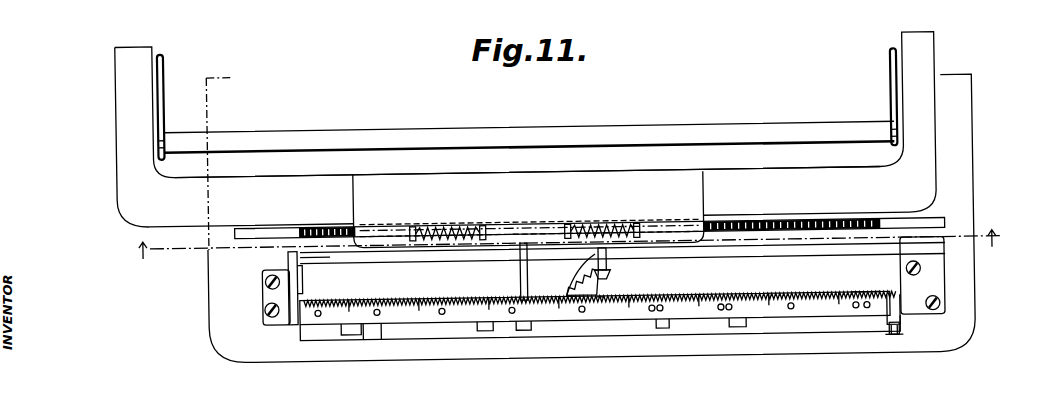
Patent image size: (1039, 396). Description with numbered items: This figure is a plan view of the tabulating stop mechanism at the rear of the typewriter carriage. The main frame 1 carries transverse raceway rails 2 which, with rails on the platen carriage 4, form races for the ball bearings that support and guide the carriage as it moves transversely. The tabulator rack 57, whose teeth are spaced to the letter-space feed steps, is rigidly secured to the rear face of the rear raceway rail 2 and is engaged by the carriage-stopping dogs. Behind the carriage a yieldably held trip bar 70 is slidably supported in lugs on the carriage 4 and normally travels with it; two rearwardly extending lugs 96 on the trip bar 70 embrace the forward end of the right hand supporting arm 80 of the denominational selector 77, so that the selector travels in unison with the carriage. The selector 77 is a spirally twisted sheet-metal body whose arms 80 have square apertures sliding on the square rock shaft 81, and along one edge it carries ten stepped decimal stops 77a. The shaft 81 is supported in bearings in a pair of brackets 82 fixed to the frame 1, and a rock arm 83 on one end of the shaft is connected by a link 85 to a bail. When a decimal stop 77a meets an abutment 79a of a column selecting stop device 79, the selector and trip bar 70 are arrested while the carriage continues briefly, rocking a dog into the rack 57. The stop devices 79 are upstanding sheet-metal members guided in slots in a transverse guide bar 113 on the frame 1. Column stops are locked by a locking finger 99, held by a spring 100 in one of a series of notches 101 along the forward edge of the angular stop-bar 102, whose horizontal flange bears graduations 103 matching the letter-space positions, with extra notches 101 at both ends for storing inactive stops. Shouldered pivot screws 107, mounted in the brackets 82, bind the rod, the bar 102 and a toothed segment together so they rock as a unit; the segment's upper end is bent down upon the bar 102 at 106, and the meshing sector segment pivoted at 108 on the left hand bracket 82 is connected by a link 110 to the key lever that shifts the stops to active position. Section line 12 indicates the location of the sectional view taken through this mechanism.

The main frame 1 is at (967, 157).
The raceway rail 2 is at (937, 211).
The platen carriage 4 is at (128, 152).
The section line 12 is at (1010, 243).
The tabulator rack 57 is at (752, 236).
The trip bar 70 is at (566, 232).
The denominational selector 77 is at (520, 280).
The decimal stop 77a is at (600, 300).
The column selecting stop device 79 is at (436, 322).
The abutment of stop device 79a is at (522, 330).
The supporting arm 80 is at (520, 292).
The rock shaft 81 is at (696, 255).
The bracket 82 is at (262, 285).
The rock arm 83 is at (302, 256).
The link 85 is at (295, 322).
The lug 96 is at (506, 234).
The locking finger 99 is at (408, 297).
The spring 100 is at (682, 331).
The notch 101 is at (876, 296).
The stop-bar 102 is at (356, 333).
The graduations 103 is at (490, 330).
The bent end of segment 106 is at (884, 312).
The shouldered pivot screw 107 is at (278, 319).
The pivot 108 is at (898, 342).
The link 110 is at (892, 342).
The guide bar 113 is at (372, 340).